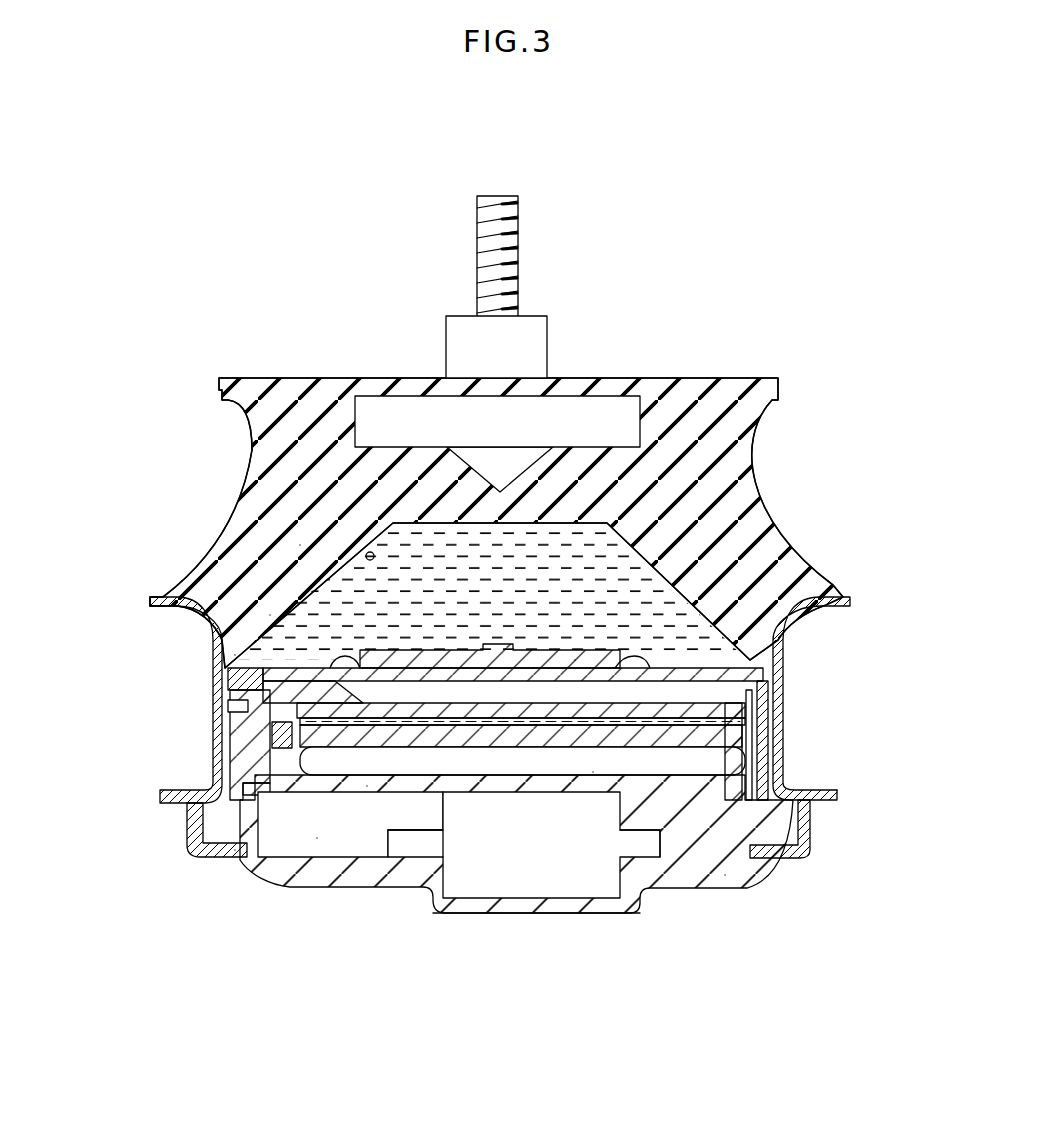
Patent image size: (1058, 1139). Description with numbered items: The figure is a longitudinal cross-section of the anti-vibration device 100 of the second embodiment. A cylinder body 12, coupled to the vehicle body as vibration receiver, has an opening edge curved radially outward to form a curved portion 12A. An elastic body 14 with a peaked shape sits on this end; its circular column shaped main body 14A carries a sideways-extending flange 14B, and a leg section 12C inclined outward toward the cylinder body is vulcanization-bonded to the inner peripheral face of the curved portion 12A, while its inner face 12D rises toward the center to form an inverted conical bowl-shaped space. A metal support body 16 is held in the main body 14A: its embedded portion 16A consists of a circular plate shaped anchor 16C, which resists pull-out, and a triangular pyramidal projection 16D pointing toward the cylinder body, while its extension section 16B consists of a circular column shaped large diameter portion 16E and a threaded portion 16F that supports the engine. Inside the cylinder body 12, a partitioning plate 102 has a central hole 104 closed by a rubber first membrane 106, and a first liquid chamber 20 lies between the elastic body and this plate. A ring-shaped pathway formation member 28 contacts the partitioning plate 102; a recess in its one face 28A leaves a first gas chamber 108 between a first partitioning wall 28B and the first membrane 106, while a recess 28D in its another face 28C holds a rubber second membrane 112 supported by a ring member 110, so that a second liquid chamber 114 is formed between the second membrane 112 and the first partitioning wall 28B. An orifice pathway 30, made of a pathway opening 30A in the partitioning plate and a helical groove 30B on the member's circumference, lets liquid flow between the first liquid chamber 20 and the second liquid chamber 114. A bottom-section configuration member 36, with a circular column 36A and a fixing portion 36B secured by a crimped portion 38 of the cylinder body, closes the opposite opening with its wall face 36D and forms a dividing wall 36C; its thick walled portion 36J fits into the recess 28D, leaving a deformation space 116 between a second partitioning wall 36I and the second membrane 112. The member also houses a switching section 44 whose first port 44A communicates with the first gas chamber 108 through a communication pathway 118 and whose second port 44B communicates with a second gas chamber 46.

The anti-vibration device 100 is at (738, 156).
The cylinder body 12 is at (442, 700).
The curved portion 12A is at (105, 615).
The leg section 12C is at (300, 545).
The inner face 12D is at (366, 553).
The elastic body 14 is at (756, 468).
The main body 14A is at (690, 432).
The flange 14B is at (762, 400).
The support body 16 is at (440, 307).
The embedded portion 16A is at (432, 371).
The extension section 16B is at (449, 307).
The anchor 16C is at (383, 412).
The projection 16D is at (446, 334).
The large diameter portion 16E is at (486, 456).
The threaded portion 16F is at (477, 242).
The first liquid chamber 20 is at (618, 575).
The pathway formation member 28 is at (413, 715).
The one face 28A is at (345, 660).
The first partitioning wall 28B is at (438, 710).
The another face 28C is at (200, 845).
The recess 28D is at (255, 783).
The orifice pathway 30 is at (426, 685).
The pathway opening 30A is at (235, 655).
The groove 30B is at (188, 672).
The bottom-section configuration member 36 is at (526, 896).
The circular column 36A is at (725, 875).
The fixing portion 36B is at (810, 850).
The dividing wall 36C is at (593, 772).
The wall face 36D is at (525, 918).
The second partitioning wall 36I is at (367, 788).
The thick walled portion 36J is at (235, 850).
The crimped portion 38 is at (847, 803).
The switching section 44 is at (513, 904).
The first port 44A is at (652, 842).
The second port 44B is at (417, 842).
The second gas chamber 46 is at (312, 847).
The partitioning plate 102 is at (270, 615).
The central hole 104 is at (380, 662).
The first membrane 106 is at (575, 660).
The first gas chamber 108 is at (766, 668).
The ring member 110 is at (705, 735).
The second membrane 112 is at (700, 760).
The second liquid chamber 114 is at (700, 702).
The deformation space 116 is at (317, 838).
The communication pathway 118 is at (742, 775).